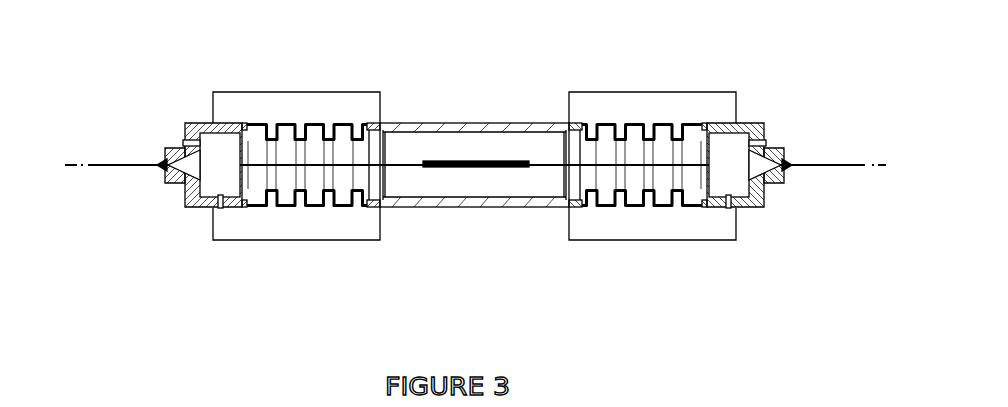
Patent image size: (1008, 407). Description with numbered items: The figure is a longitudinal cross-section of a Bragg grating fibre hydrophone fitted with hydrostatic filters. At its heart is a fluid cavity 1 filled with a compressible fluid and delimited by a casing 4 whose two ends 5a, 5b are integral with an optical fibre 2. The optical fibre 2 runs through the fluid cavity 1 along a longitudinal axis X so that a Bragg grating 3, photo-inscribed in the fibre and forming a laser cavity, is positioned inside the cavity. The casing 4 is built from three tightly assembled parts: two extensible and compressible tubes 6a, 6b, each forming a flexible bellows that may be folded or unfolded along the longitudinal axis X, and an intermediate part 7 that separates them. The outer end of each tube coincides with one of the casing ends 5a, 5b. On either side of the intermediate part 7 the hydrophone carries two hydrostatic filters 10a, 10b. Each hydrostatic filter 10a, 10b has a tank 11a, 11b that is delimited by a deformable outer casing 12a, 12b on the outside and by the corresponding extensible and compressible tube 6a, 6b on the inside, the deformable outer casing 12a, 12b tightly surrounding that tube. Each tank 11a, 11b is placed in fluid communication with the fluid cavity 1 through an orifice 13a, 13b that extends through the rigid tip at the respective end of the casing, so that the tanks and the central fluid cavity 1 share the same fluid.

The fluid cavity 1 is at (454, 187).
The optical fibre 2 is at (100, 168).
The Bragg grating 3 is at (505, 168).
The casing 4 is at (468, 168).
The first casing end 5a is at (158, 152).
The second casing end 5b is at (794, 153).
The first extensible and compressible tube 6a is at (279, 125).
The second extensible and compressible tube 6b is at (665, 125).
The intermediate part 7 is at (465, 123).
The first hydrostatic filter 10a is at (205, 96).
The second hydrostatic filter 10b is at (756, 95).
The first tank 11a is at (333, 226).
The second tank 11b is at (592, 228).
The first deformable outer casing 12a is at (343, 92).
The second deformable outer casing 12b is at (592, 90).
The first orifice 13a is at (220, 209).
The second orifice 13b is at (728, 209).
The longitudinal axis X is at (882, 170).